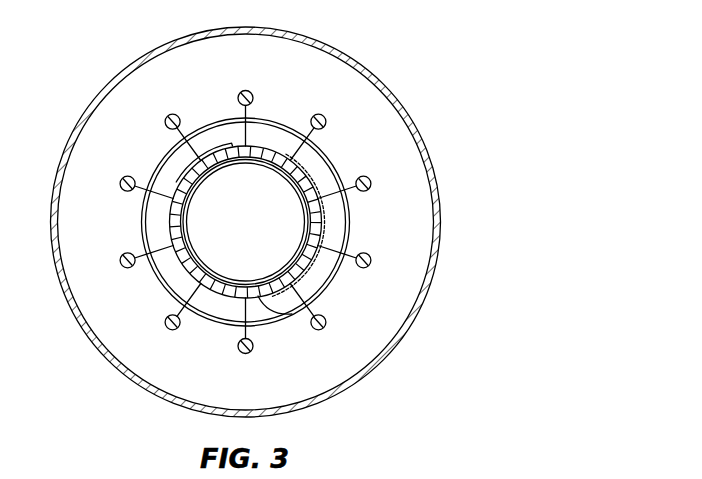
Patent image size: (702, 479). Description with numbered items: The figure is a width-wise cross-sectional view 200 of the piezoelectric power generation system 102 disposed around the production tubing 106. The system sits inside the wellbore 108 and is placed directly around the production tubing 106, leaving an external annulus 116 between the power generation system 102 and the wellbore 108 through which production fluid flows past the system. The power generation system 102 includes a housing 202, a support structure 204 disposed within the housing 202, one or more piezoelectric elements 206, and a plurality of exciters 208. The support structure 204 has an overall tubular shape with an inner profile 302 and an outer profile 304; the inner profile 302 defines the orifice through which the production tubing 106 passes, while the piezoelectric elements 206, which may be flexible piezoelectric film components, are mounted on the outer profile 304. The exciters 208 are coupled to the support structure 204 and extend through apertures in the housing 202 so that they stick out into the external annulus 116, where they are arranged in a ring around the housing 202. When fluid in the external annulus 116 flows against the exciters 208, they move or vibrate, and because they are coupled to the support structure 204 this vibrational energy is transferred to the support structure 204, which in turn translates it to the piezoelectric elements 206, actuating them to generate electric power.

The partially cut away view 200 is at (428, 44).
The wellbore 108 is at (437, 263).
The external annulus 116 is at (288, 66).
The power generation system 102 is at (167, 158).
The housing 202 is at (333, 283).
The production tubing 106 is at (290, 181).
The inner profile 302 is at (186, 218).
The outer profile 304 is at (213, 300).
The piezoelectric elements 206 is at (308, 167).
The support structure 204 is at (268, 303).
The exciters 208 is at (165, 119).